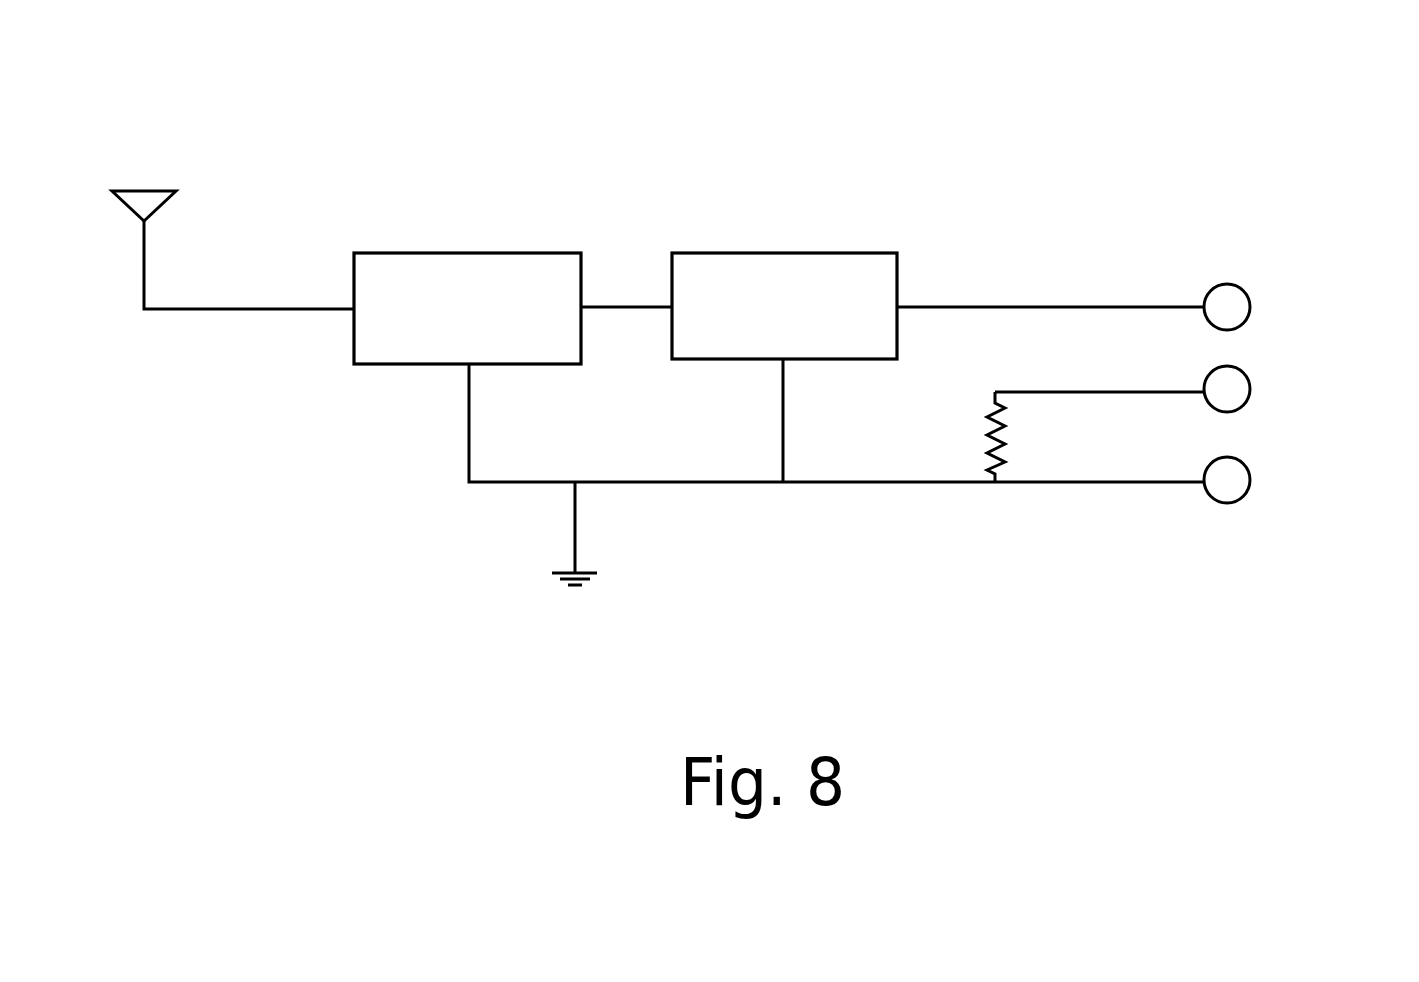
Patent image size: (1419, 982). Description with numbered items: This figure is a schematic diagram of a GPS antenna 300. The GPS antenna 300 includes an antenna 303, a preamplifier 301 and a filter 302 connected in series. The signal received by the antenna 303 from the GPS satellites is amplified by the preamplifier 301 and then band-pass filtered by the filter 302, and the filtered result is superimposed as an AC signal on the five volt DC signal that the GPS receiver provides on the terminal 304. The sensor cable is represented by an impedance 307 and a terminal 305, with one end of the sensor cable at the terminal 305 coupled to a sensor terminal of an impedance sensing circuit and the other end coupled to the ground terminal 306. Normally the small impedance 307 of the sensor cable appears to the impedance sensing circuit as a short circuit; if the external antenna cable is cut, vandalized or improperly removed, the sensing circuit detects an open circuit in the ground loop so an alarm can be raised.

The GPS antenna 300 is at (1000, 105).
The preamplifier 301 is at (507, 253).
The filter 302 is at (822, 253).
The antenna 303 is at (162, 190).
The terminal 304 is at (1084, 307).
The terminal 305 is at (1084, 392).
The ground terminal 306 is at (1084, 482).
The impedance 307 is at (988, 440).